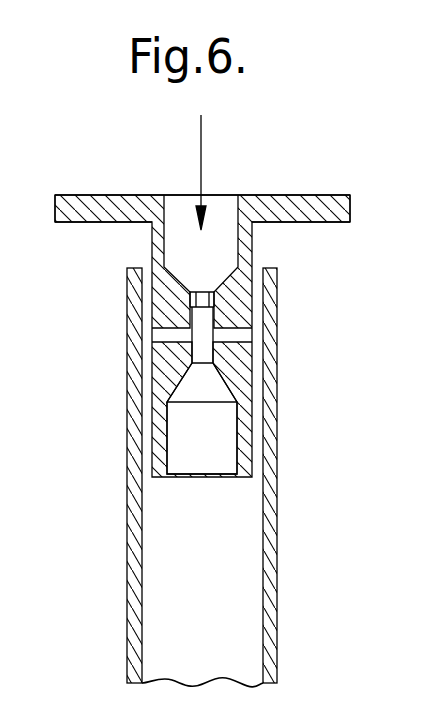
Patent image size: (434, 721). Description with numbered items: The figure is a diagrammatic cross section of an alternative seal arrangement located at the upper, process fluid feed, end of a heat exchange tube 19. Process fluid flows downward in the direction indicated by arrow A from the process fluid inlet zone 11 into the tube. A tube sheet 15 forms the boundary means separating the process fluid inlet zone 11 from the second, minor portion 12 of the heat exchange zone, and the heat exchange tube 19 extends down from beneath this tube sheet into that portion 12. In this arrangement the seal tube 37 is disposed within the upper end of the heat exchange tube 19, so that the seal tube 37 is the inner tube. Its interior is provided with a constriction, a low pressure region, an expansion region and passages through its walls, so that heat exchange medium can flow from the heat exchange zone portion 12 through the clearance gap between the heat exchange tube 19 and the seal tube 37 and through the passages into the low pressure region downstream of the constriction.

The process fluid inlet zone 11 is at (257, 172).
The tube sheet 15 is at (73, 207).
The second, minor portion of the heat exchange zone 12 is at (100, 418).
The heat exchange tube 19 is at (277, 605).
The seal tube 37 is at (252, 412).
The arrow indicating direction of flow A is at (209, 172).